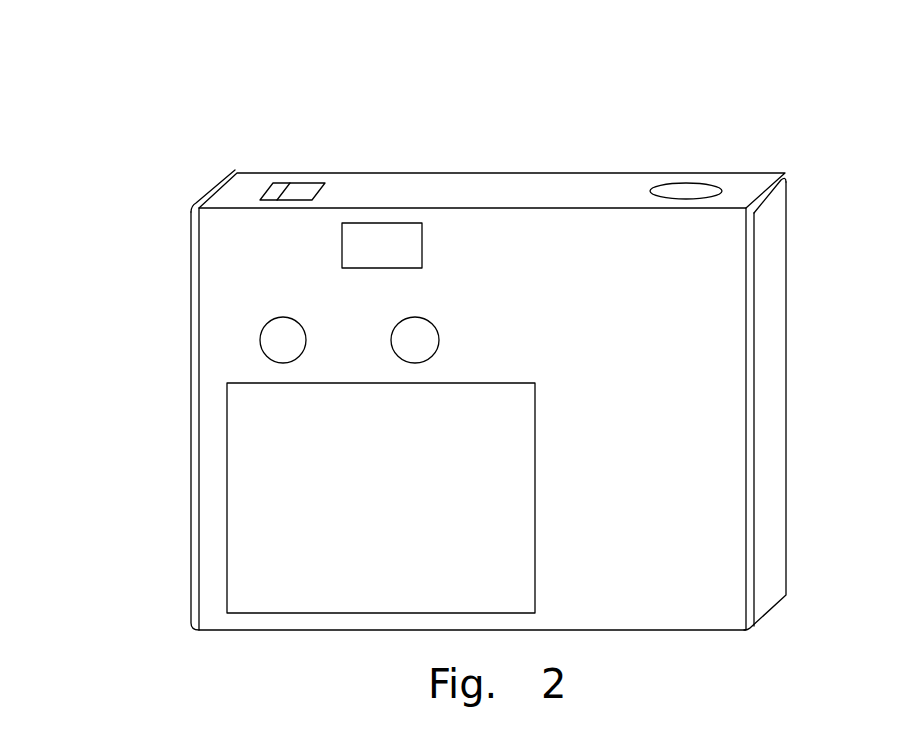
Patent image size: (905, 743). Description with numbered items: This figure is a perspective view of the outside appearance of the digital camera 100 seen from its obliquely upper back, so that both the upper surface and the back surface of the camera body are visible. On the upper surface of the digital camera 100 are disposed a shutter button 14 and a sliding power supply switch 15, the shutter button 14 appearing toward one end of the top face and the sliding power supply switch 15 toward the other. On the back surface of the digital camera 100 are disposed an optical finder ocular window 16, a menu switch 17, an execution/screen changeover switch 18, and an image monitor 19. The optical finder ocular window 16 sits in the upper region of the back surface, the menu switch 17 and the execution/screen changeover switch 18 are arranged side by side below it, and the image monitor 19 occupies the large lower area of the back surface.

The digital camera 100 is at (150, 107).
The shutter button 14 is at (675, 193).
The sliding power supply switch 15 is at (300, 191).
The optical finder ocular window 16 is at (389, 244).
The menu switch 17 is at (273, 335).
The execution/screen changeover switch 18 is at (413, 331).
The image monitor 19 is at (257, 502).